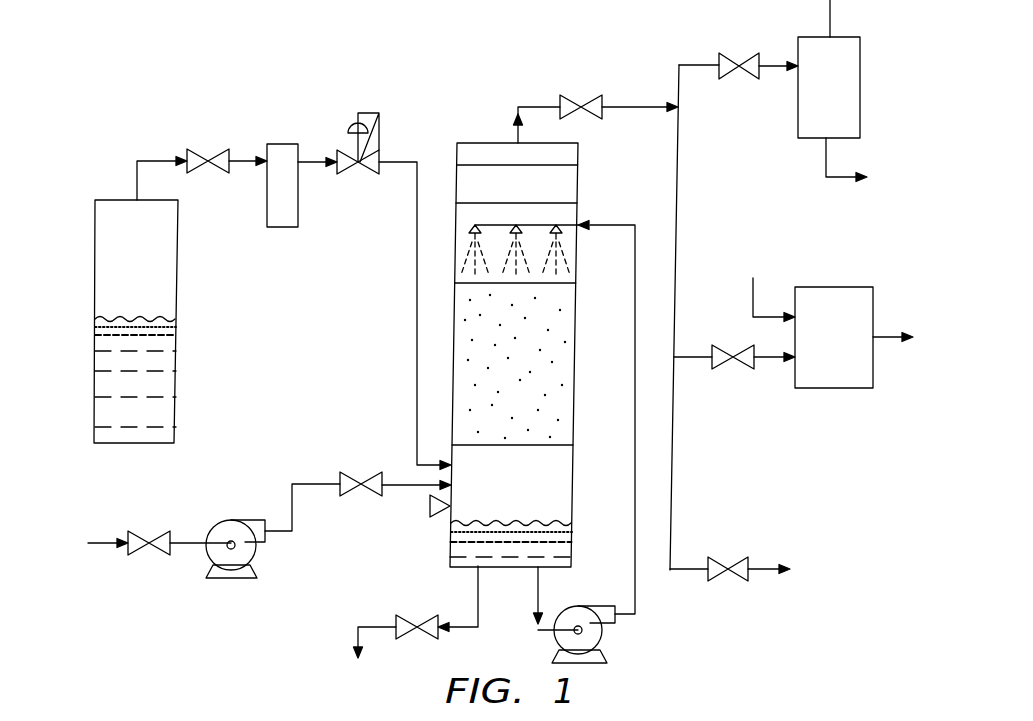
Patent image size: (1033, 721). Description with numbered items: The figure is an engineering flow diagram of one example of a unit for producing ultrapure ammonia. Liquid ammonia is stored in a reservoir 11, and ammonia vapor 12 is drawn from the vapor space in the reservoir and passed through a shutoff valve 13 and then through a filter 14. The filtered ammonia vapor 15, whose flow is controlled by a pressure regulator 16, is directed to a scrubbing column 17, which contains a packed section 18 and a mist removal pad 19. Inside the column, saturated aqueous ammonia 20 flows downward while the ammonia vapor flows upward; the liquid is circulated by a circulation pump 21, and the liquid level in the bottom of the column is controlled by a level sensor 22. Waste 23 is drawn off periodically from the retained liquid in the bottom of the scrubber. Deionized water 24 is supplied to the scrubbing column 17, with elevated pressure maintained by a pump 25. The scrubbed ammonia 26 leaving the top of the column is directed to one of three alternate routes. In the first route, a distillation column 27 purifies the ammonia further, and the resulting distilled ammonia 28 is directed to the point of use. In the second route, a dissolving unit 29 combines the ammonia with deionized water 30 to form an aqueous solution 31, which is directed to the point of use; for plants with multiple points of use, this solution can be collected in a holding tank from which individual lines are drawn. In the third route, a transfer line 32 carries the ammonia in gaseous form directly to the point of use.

The reservoir 11 is at (118, 200).
The ammonia vapor 12 is at (149, 160).
The shutoff valve 13 is at (201, 151).
The filter 14 is at (281, 144).
The filtered ammonia vapor 15 is at (304, 164).
The pressure regulator 16 is at (351, 126).
The scrubbing column 17 is at (475, 143).
The packed section 18 is at (577, 406).
The mist removal pad 19 is at (578, 176).
The saturated aqueous ammonia 20 is at (635, 224).
The circulation pump 21 is at (596, 605).
The level sensor 22 is at (428, 510).
The waste 23 is at (356, 640).
The deionized water 24 is at (106, 542).
The pump 25 is at (218, 522).
The scrubbed ammonia 26 is at (522, 106).
The distillation column 27 is at (769, 69).
The distilled ammonia 28 is at (837, 180).
The dissolving unit 29 is at (773, 337).
The deionized water 30 is at (750, 290).
The aqueous solution 31 is at (889, 336).
The transfer line 32 is at (762, 568).